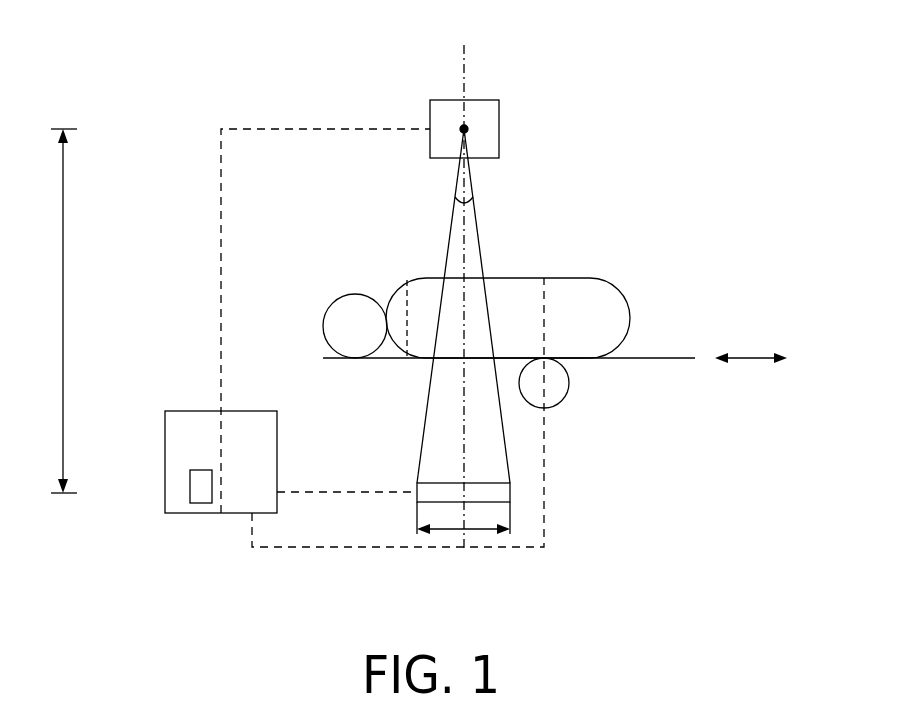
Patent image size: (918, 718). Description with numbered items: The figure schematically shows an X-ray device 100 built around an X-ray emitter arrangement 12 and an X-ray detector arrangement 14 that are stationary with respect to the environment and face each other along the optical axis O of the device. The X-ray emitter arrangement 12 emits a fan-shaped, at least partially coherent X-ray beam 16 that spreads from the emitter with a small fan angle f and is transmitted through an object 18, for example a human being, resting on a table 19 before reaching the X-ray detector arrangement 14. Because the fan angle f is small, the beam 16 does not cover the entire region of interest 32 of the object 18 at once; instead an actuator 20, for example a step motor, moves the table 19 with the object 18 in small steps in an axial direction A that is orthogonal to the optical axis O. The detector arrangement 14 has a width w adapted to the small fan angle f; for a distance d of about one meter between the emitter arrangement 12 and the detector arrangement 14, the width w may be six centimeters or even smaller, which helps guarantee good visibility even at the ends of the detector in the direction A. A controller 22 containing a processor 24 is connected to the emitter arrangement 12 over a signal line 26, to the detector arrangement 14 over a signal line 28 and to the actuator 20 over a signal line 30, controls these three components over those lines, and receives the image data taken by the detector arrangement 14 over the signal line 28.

The imaging system 100 is at (152, 78).
The optical axis O is at (466, 50).
The X-ray emitter arrangement 12 is at (499, 126).
The X-ray beam 16 is at (455, 230).
The fan angle f is at (466, 194).
The object 18 is at (578, 288).
The region of interest 32 is at (528, 288).
The table 19 is at (687, 360).
The actuator 20 is at (565, 396).
The axial direction A is at (751, 345).
The X-ray detector arrangement 14 is at (524, 508).
The width w is at (512, 494).
The controller 22 is at (165, 433).
The processor 24 is at (198, 503).
The signal line 26 is at (221, 243).
The signal line 28 is at (330, 490).
The signal line 30 is at (367, 548).
The distance d is at (52, 311).